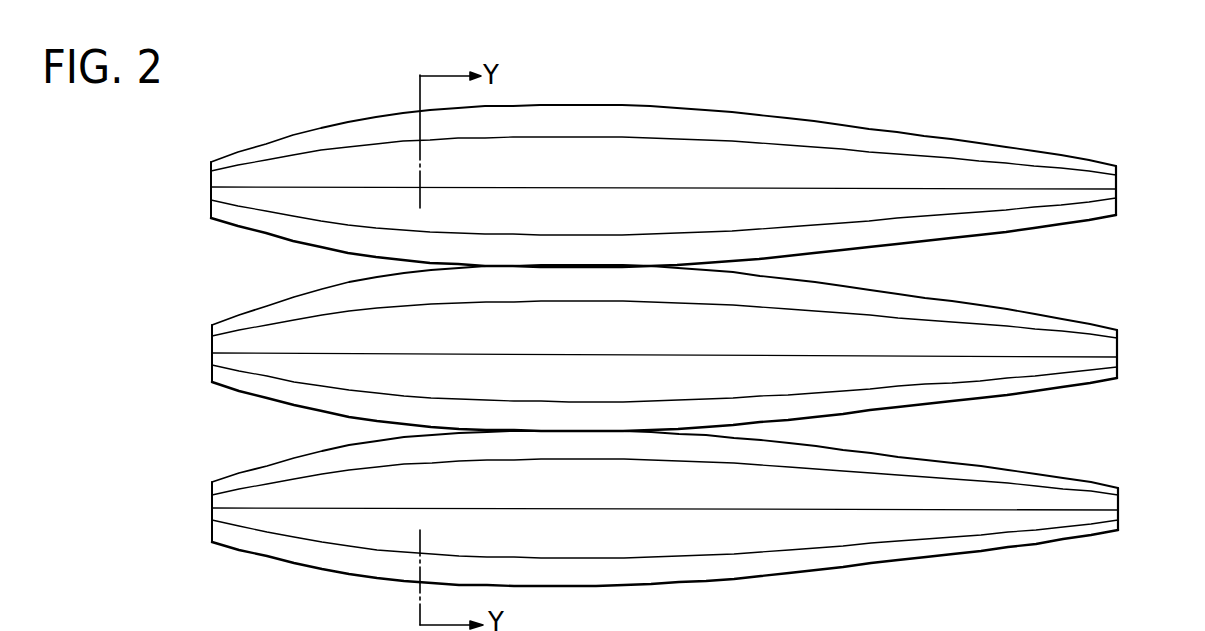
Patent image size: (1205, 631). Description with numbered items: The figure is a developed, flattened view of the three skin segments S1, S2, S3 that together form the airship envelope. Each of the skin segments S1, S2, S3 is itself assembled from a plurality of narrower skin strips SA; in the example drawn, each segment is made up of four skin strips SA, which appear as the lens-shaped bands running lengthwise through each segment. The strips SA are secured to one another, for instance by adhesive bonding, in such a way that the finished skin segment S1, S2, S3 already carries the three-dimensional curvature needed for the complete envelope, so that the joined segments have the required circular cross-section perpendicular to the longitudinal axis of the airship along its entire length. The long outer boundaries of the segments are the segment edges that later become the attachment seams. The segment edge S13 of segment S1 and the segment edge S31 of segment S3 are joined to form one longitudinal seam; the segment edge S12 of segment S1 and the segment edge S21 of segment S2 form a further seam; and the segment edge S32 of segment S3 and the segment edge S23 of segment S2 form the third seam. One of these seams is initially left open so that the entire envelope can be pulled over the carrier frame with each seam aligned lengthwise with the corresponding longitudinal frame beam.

The skin segment S1 is at (305, 122).
The skin segment S2 is at (275, 560).
The skin segment S3 is at (234, 372).
The segment edge S12 is at (1057, 158).
The segment edge S13 is at (1057, 222).
The segment edge S31 is at (1087, 323).
The segment edge S32 is at (1085, 383).
The segment edge S23 is at (1065, 480).
The segment edge S21 is at (1065, 538).
The skin strip SA is at (630, 165).